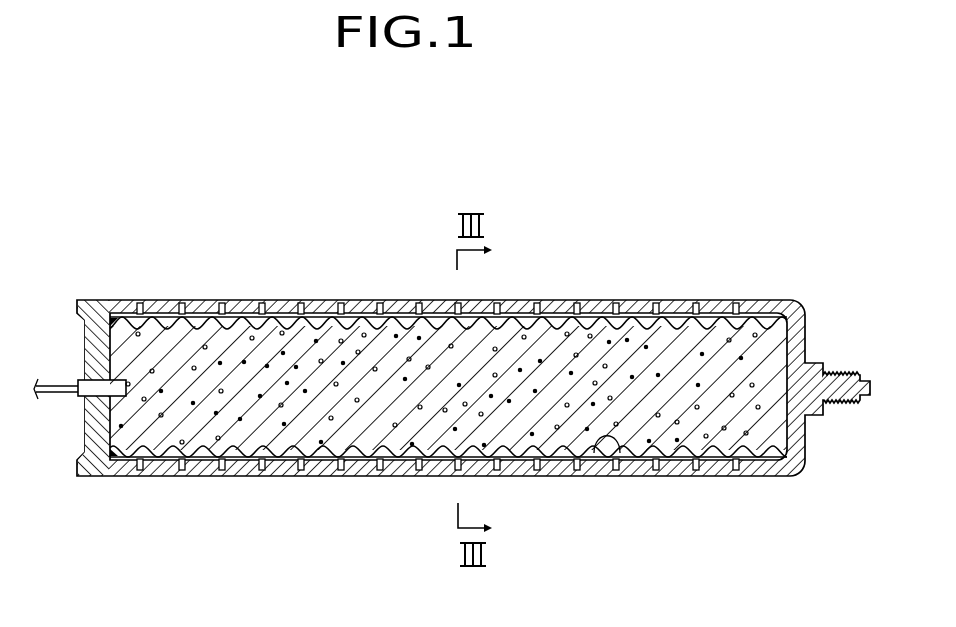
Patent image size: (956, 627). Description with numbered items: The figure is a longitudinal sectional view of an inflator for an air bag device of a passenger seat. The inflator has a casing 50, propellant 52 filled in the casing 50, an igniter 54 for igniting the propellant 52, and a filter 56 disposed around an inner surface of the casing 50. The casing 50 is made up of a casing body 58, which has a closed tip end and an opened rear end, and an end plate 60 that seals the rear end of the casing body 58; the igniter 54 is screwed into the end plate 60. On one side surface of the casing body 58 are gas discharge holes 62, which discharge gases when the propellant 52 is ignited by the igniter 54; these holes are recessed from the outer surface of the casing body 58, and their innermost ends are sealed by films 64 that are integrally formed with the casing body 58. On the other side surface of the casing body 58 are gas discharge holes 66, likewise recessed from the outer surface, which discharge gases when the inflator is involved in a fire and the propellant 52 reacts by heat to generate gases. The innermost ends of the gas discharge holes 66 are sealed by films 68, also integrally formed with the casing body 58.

The casing 50 is at (240, 296).
The propellant 52 is at (515, 345).
The igniter 54 is at (75, 397).
The filter 56 is at (153, 332).
The casing body 58 is at (389, 297).
The end plate 60 is at (85, 437).
The gas discharge holes 62 is at (182, 300).
The films 64 is at (620, 333).
The gas discharge holes 66 is at (140, 478).
The films 68 is at (597, 476).